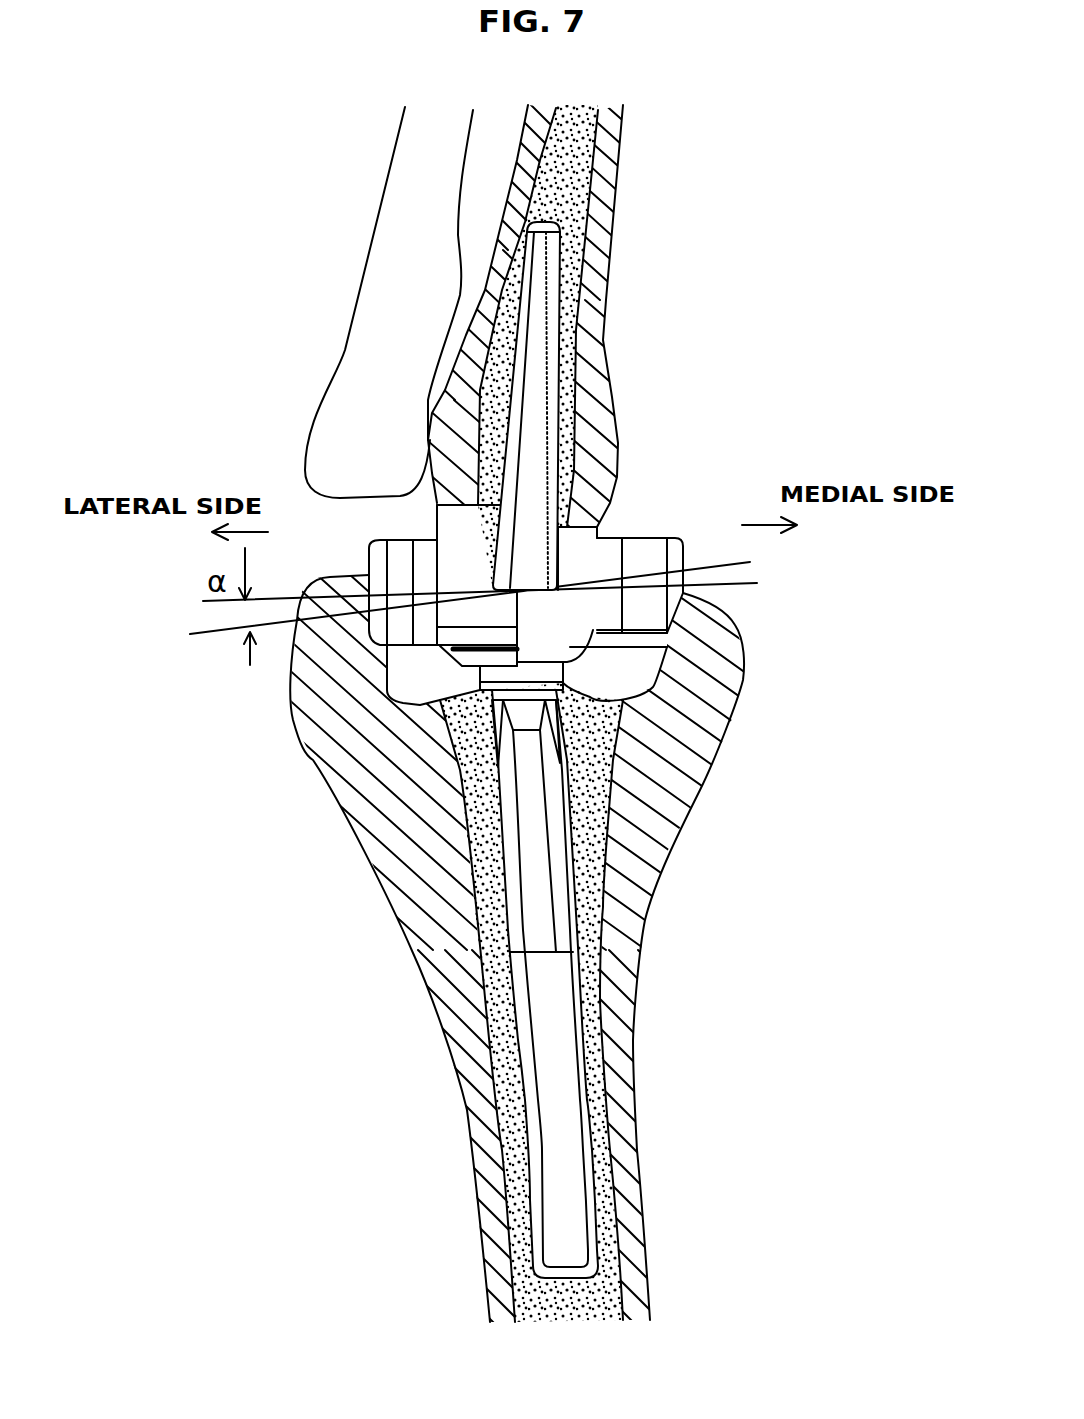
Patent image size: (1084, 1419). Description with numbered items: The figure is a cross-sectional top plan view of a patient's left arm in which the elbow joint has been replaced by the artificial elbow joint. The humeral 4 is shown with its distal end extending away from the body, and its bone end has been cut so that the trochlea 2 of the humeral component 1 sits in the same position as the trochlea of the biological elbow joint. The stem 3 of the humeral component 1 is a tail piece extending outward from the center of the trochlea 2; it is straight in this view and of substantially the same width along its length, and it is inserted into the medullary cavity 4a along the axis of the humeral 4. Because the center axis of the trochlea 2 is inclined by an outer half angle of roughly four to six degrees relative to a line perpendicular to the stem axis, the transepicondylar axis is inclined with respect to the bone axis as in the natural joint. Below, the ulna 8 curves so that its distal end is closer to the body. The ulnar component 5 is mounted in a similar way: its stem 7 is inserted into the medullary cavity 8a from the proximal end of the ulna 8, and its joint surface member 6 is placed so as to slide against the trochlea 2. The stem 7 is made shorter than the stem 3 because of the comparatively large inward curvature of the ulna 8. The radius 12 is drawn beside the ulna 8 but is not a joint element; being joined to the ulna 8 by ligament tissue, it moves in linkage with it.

The radius 12 is at (373, 337).
The ulna 8 is at (598, 262).
The medullary cavity 8a is at (570, 305).
The stem 7 is at (533, 383).
The ulnar component 5 is at (565, 423).
The joint surface member 6 is at (583, 553).
The trochlea 2 is at (400, 624).
The humeral 4 is at (447, 933).
The medullary cavity 4a is at (470, 780).
The humeral component 1 is at (497, 830).
The stem 3 is at (545, 992).